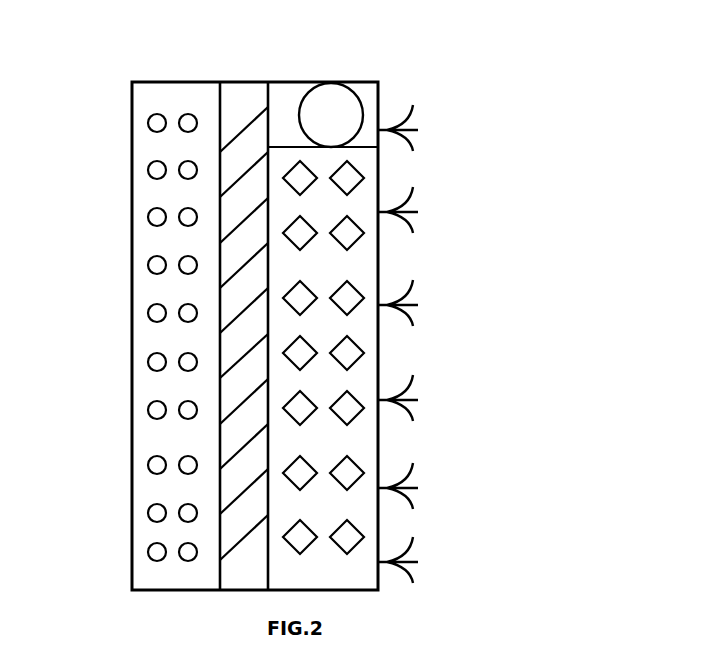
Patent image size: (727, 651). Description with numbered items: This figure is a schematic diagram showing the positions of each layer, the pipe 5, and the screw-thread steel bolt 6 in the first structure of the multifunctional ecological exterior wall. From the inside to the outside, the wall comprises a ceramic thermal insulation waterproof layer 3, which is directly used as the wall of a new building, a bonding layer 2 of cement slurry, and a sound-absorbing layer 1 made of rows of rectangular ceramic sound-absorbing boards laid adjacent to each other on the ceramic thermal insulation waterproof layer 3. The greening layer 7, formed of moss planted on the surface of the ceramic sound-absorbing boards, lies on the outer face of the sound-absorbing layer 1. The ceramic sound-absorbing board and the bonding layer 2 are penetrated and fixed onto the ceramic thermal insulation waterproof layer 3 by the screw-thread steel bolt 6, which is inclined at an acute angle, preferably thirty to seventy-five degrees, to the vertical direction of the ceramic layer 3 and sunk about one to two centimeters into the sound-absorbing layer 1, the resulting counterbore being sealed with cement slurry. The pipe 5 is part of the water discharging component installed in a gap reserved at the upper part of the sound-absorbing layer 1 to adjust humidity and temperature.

The sound-absorbing layer 1 is at (302, 82).
The bonding layer 2 is at (243, 82).
The ceramic thermal insulation waterproof layer 3 is at (132, 113).
The pipe 5 is at (362, 90).
The screw-thread steel bolt 6 is at (163, 322).
The greening layer 7 is at (403, 105).